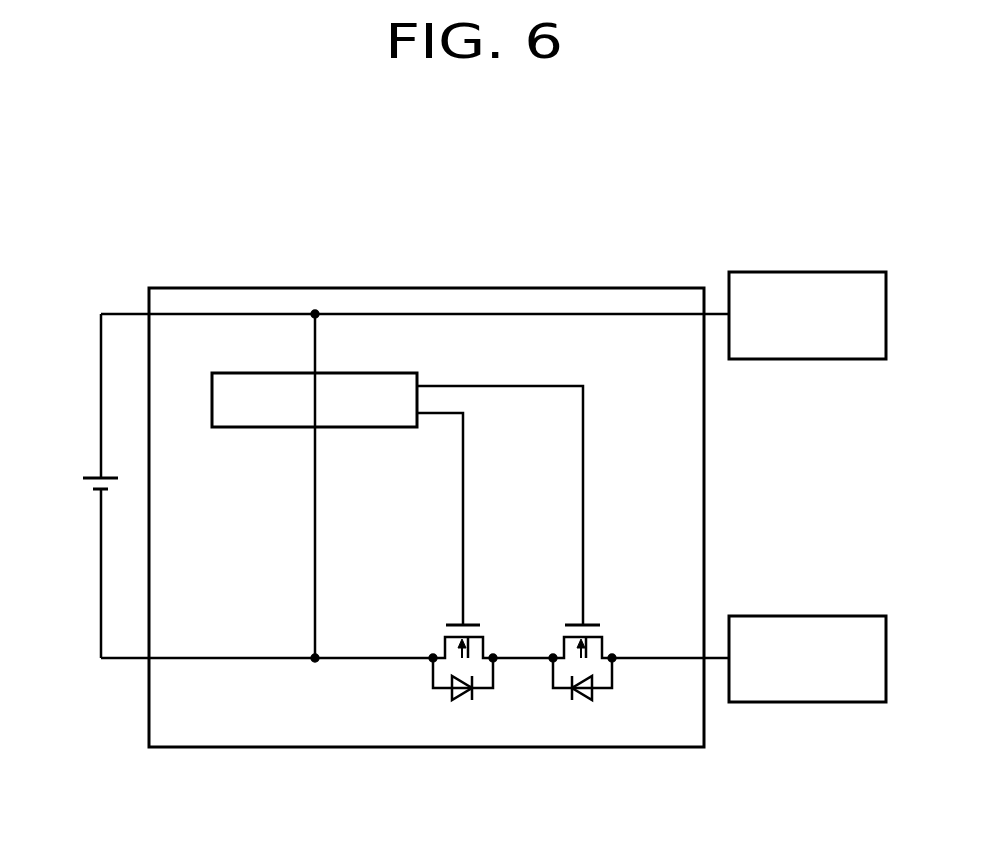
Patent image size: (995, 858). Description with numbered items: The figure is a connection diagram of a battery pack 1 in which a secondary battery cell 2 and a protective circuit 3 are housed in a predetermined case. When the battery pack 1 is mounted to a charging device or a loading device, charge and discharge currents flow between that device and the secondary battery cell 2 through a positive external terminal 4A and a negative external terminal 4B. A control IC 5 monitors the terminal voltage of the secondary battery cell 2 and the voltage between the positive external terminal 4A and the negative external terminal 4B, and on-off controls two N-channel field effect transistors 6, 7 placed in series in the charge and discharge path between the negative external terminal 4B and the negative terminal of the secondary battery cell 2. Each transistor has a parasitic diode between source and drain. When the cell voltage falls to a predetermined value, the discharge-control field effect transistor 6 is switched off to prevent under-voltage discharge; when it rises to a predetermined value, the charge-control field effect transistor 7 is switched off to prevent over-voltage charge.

The battery pack 1 is at (630, 260).
The secondary battery cell 2 is at (90, 478).
The protective circuit 3 is at (705, 483).
The positive external terminal 4A is at (806, 272).
The negative external terminal 4B is at (806, 616).
The control IC 5 is at (404, 373).
The discharge-control field effect transistor 6 is at (441, 650).
The charge-control field effect transistor 7 is at (604, 643).